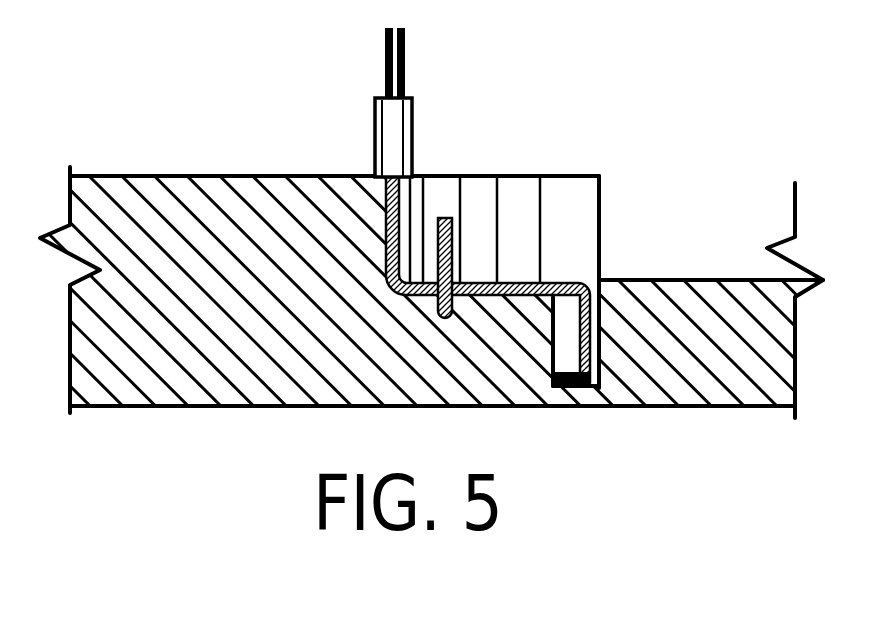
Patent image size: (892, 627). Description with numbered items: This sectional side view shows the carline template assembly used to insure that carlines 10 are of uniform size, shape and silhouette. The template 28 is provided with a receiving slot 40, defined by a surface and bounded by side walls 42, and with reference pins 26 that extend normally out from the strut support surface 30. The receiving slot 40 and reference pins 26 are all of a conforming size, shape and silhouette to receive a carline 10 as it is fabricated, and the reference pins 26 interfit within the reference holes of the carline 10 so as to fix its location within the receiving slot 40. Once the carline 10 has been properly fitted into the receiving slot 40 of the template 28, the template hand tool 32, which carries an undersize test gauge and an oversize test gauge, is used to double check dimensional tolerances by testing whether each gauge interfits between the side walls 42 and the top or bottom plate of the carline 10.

The carline 10 is at (527, 273).
The reference pins 26 is at (448, 217).
The template 28 is at (127, 407).
The strut support surface 30 is at (487, 300).
The template hand tool 32 is at (398, 120).
The receiving slot 40 is at (512, 193).
The side walls 42 is at (347, 195).